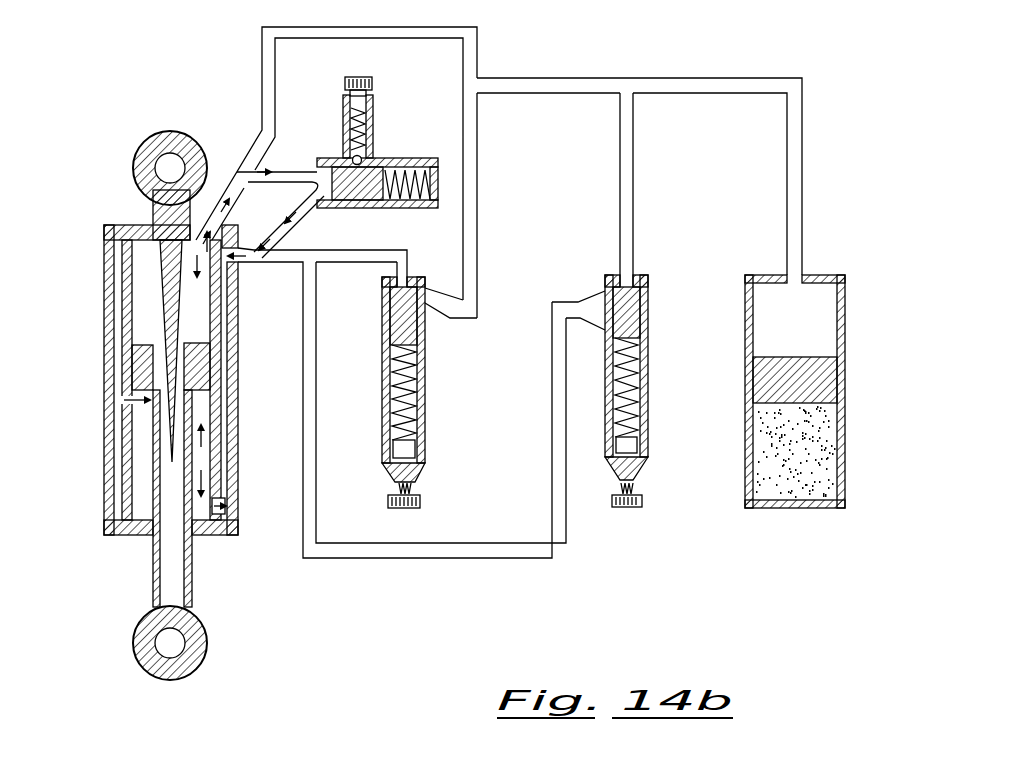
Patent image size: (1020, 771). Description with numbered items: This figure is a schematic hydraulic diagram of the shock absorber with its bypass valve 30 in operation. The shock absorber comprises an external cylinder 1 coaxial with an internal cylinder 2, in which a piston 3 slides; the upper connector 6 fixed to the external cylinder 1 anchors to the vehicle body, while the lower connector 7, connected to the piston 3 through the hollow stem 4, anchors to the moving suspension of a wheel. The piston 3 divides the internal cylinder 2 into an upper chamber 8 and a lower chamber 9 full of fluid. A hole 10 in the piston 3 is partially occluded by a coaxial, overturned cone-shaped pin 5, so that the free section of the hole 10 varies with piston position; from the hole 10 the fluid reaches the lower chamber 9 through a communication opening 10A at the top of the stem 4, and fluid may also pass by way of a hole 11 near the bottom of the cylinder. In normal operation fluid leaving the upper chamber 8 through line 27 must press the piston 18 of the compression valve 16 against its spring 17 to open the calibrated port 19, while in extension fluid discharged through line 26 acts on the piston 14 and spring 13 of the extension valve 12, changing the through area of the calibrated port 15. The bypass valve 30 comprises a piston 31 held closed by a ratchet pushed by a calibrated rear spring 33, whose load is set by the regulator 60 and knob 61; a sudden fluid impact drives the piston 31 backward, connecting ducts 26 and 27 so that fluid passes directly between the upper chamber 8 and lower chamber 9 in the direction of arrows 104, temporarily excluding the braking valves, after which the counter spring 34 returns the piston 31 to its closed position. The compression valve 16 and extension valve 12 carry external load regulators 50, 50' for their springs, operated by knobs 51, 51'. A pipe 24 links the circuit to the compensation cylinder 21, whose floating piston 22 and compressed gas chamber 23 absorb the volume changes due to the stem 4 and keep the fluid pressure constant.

The external cylinder 1 is at (109, 305).
The internal cylinder 2 is at (115, 468).
The piston 3 is at (135, 365).
The stem 4 is at (155, 572).
The pin 5 is at (165, 275).
The upper connector 6 is at (152, 182).
The lower connector 7 is at (202, 660).
The upper chamber 8 is at (200, 293).
The lower chamber 9 is at (203, 435).
The hole 10 is at (185, 338).
The communication opening 10A is at (135, 400).
The hole 11 is at (226, 505).
The extension valve 12 is at (422, 408).
The spring 13 is at (388, 398).
The piston 14 is at (392, 318).
The calibrated port 15 is at (428, 318).
The compression valve 16 is at (642, 410).
The spring 17 is at (642, 367).
The piston 18 is at (640, 313).
The port 19 is at (610, 307).
The cylinder 21 is at (822, 276).
The floating piston 22 is at (778, 368).
The chamber 23 is at (793, 480).
The pipe to accumulator 24 is at (478, 212).
The line 26 is at (323, 262).
The line 27 is at (262, 90).
The bypass valve 30 is at (440, 205).
The piston 31 is at (392, 178).
The rear spring 33 is at (347, 132).
The spring 34 is at (403, 204).
The external load regulator 50 is at (444, 461).
The external load regulator 50' is at (671, 459).
The knob 51 is at (441, 505).
The knob 51' is at (641, 532).
The regulator 60 is at (372, 110).
The knob 61 is at (358, 78).
The arrows 104 is at (242, 178).